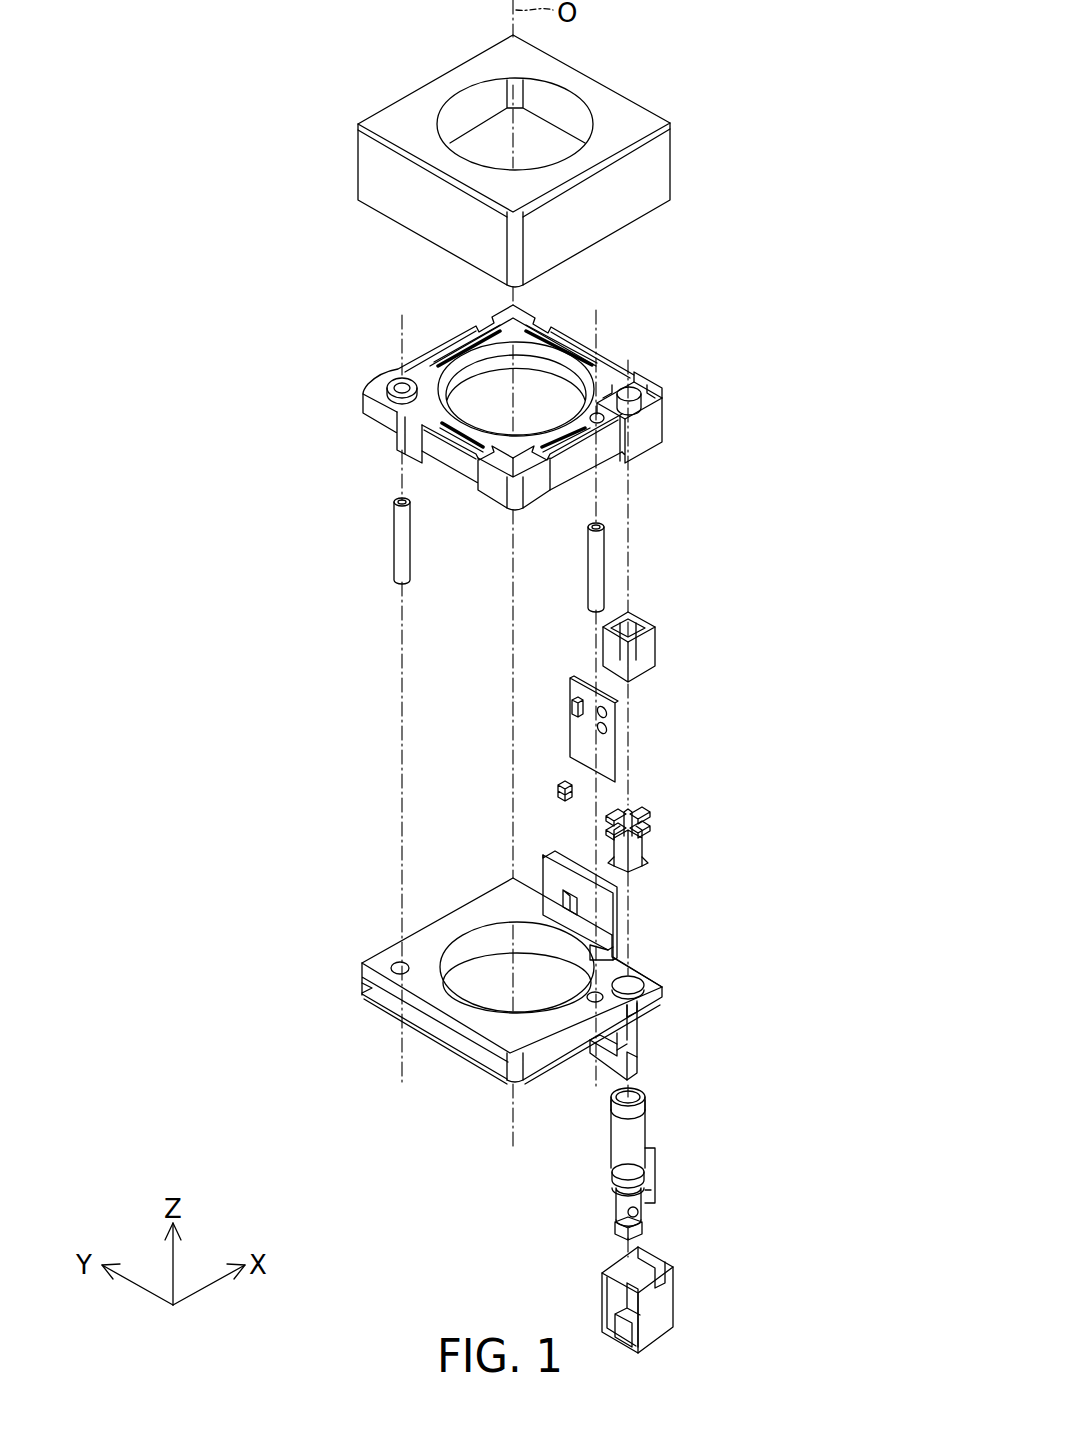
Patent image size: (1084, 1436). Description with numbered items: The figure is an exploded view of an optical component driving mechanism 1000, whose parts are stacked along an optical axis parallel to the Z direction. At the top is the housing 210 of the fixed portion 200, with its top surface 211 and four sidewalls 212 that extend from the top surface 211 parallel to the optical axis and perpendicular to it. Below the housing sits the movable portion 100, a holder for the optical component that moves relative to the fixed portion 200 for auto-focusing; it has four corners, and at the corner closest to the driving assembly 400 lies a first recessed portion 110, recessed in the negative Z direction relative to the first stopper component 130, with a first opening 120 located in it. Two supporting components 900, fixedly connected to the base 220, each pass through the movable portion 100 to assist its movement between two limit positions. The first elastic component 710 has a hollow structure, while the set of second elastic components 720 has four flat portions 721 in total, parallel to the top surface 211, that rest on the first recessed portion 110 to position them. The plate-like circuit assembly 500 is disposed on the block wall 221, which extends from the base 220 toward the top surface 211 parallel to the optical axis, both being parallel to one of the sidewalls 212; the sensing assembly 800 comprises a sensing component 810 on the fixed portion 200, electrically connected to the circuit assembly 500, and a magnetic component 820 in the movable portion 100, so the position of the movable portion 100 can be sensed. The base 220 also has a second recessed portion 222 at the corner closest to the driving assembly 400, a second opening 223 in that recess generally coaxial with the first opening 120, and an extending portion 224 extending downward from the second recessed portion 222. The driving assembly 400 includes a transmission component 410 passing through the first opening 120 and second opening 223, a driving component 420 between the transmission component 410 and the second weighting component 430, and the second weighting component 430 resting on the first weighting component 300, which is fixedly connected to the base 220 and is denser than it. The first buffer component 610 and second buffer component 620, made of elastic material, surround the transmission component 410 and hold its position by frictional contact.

The optical component driving mechanism 1000 is at (207, 75).
The movable portion 100 is at (372, 416).
The first recessed portion 110 is at (618, 375).
The first opening 120 is at (633, 400).
The first stopper component 130 is at (470, 345).
The fixed portion 200 is at (880, 70).
The housing 210 is at (372, 172).
The top surface 211 is at (625, 117).
The sidewalls 212 is at (625, 208).
The base 220 is at (372, 987).
The block wall 221 is at (615, 913).
The second recessed portion 222 is at (660, 1003).
The second opening 223 is at (648, 975).
The extending portion 224 is at (640, 1072).
The first weighting component 300 is at (660, 1315).
The driving assembly 400 is at (598, 1195).
The transmission component 410 is at (635, 1142).
The driving component 420 is at (640, 1213).
The second weighting component 430 is at (644, 1232).
The circuit assembly 500 is at (607, 752).
The first buffer component 610 is at (613, 1112).
The second buffer component 620 is at (616, 1178).
The first elastic component 710 is at (652, 660).
The second elastic components 720 is at (645, 850).
The flat portions 721 is at (628, 812).
The sensing assembly 800 is at (880, 282).
The sensing component 810 is at (572, 710).
The magnetic component 820 is at (558, 792).
The supporting components 900 is at (400, 540).